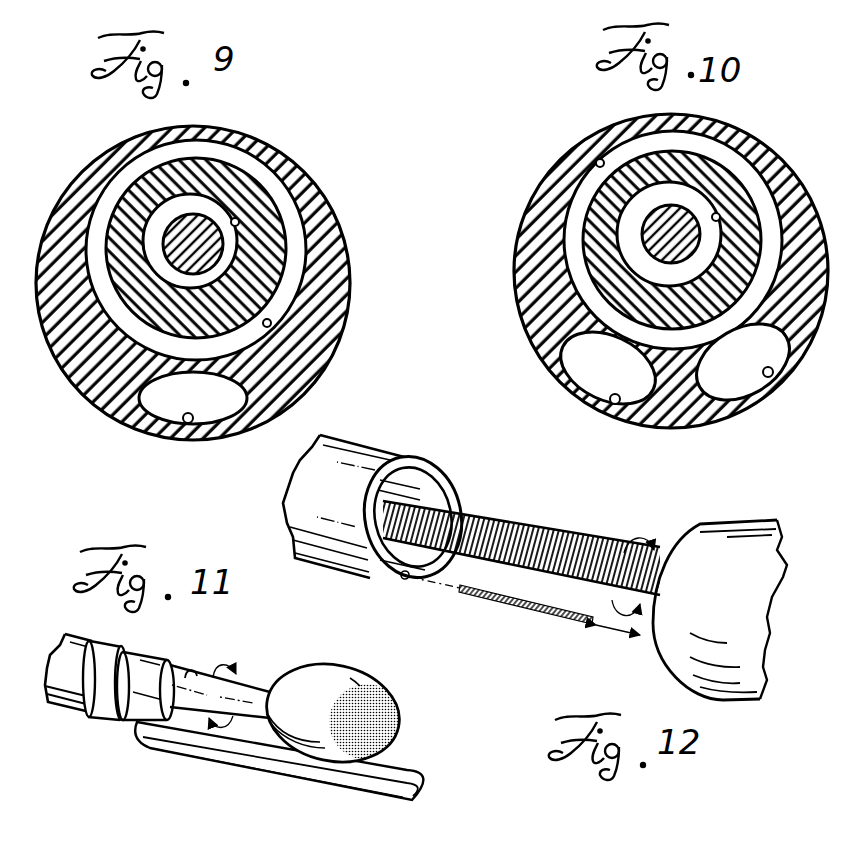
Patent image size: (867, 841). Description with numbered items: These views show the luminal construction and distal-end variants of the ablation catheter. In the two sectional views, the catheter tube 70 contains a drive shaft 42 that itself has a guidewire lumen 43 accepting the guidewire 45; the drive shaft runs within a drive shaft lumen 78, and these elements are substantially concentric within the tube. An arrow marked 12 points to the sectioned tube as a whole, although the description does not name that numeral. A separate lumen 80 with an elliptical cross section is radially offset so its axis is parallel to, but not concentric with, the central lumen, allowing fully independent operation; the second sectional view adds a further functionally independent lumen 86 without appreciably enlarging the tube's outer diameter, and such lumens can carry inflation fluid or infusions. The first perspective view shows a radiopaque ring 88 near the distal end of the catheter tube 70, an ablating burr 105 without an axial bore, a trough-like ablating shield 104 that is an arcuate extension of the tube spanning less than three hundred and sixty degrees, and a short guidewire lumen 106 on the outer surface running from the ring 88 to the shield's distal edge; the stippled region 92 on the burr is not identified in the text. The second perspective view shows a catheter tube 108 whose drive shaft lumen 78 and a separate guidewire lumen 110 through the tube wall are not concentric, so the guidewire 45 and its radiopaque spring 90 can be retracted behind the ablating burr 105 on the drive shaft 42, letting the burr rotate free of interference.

In FIG. 9, the probe body 12 is at (349, 221).
In FIG. 9, the drive shaft 42 is at (247, 172).
In FIG. 10, the drive shaft 42 is at (730, 160).
In FIG. 12, the drive shaft 42 is at (507, 518).
In FIG. 11, the drive shaft 42 is at (262, 687).
In FIG. 9, the guidewire lumen 43 is at (239, 220).
In FIG. 10, the guidewire lumen 43 is at (720, 215).
In FIG. 9, the guidewire 45 is at (223, 253).
In FIG. 10, the guidewire 45 is at (645, 238).
In FIG. 12, the guidewire 45 is at (598, 624).
In FIG. 9, the catheter tube 70 is at (345, 300).
In FIG. 10, the catheter tube 70 is at (560, 378).
In FIG. 11, the catheter tube 70 is at (85, 712).
In FIG. 9, the drive shaft lumen 78 is at (271, 325).
In FIG. 10, the drive shaft lumen 78 is at (600, 159).
In FIG. 12, the drive shaft lumen 78 is at (428, 480).
In FIG. 11, the drive shaft lumen 78 is at (200, 673).
In FIG. 9, the lumen 80 is at (187, 423).
In FIG. 10, the lumen 80 is at (614, 404).
In FIG. 10, the lumen 86 is at (771, 377).
In FIG. 11, the ring 88 is at (140, 650).
In FIG. 12, the spring 90 is at (521, 611).
In FIG. 11, the textured surface 92 is at (400, 713).
In FIG. 11, the ablating shield 104 is at (427, 767).
In FIG. 12, the ablating burr 105 is at (746, 514).
In FIG. 11, the ablating burr 105 is at (334, 690).
In FIG. 11, the guidewire lumen 106 is at (423, 793).
In FIG. 12, the catheter tube 108 is at (381, 447).
In FIG. 12, the guidewire lumen 110 is at (401, 579).